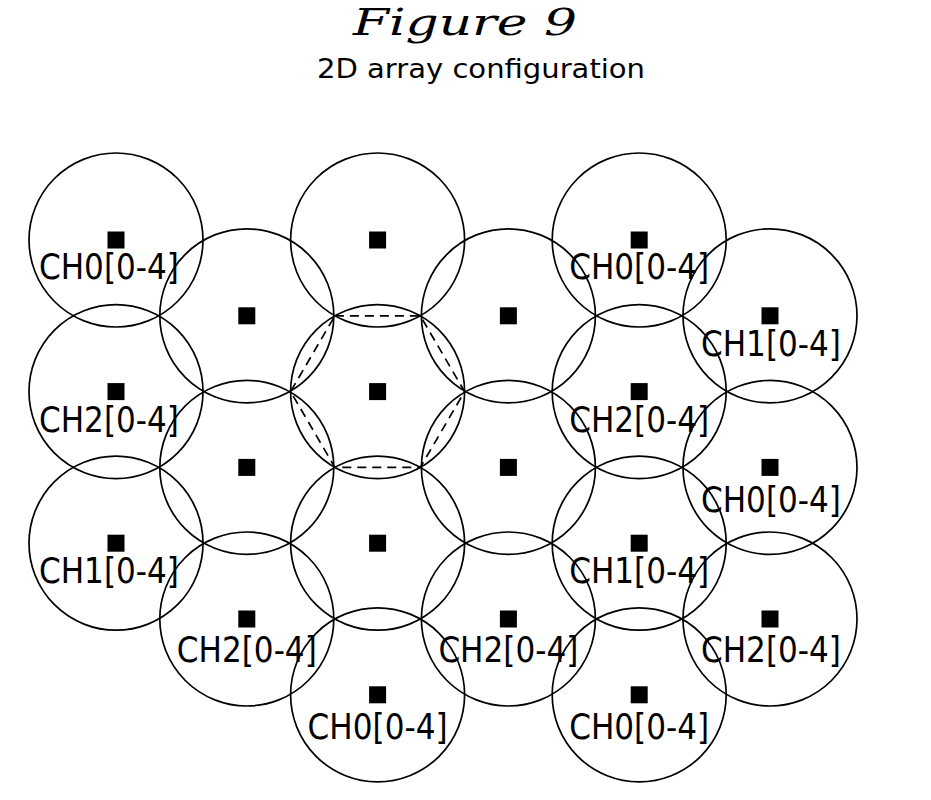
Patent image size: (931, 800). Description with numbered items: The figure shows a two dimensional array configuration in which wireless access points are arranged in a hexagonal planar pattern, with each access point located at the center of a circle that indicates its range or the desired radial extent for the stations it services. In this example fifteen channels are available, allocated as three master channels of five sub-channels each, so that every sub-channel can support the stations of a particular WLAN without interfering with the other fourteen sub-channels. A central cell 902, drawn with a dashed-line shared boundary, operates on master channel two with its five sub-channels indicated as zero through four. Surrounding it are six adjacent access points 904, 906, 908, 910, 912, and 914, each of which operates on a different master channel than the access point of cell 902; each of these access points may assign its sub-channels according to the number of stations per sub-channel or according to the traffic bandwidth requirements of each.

The cell 902 is at (362, 370).
The adjacent access point 904 is at (368, 236).
The adjacent access point 906 is at (493, 290).
The adjacent access point 908 is at (500, 466).
The adjacent access point 910 is at (368, 541).
The adjacent access point 912 is at (240, 463).
The adjacent access point 914 is at (230, 290).